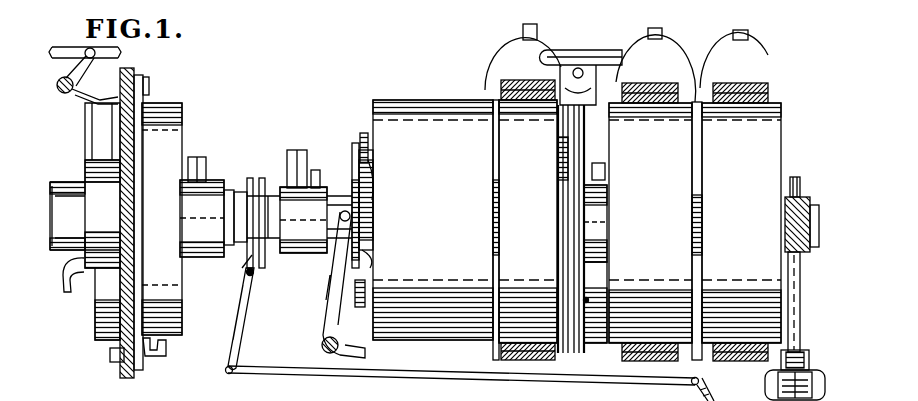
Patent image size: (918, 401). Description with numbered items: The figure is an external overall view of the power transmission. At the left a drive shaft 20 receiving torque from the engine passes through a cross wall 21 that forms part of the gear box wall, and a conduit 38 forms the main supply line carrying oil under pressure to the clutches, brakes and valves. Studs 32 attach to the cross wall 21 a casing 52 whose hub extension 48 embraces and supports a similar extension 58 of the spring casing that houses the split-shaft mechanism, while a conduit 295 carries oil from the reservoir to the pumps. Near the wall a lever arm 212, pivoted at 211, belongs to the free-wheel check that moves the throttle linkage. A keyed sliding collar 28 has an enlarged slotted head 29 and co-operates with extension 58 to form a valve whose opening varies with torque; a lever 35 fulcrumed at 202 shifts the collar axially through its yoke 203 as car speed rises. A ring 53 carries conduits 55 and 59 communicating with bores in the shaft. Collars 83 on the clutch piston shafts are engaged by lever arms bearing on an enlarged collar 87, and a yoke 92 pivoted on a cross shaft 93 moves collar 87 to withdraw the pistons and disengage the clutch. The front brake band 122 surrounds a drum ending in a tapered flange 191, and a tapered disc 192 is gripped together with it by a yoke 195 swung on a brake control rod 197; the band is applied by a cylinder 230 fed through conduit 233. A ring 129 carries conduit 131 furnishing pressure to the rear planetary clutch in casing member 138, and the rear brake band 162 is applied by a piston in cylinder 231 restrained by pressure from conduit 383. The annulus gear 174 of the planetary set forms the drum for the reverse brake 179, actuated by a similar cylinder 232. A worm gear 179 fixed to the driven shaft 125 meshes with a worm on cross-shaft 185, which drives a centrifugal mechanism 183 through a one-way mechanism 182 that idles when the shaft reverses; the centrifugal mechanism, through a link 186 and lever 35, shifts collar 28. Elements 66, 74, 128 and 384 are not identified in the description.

The drive shaft 20 is at (70, 196).
The cross wall 21 is at (132, 72).
The pivot 211 is at (61, 92).
The lever arm 212 is at (78, 97).
The conduit 38 is at (63, 290).
The studs 32 is at (110, 354).
The conduit 295 is at (159, 353).
The casing 52 is at (173, 147).
The hub extension 48 is at (186, 178).
The collar 66 is at (214, 184).
The collar extension 58 is at (224, 256).
The sliding collar 28 is at (250, 178).
The slotted head 29 is at (262, 178).
The fulcrum 202 is at (252, 278).
The lever arm 35 is at (238, 312).
The yoke 203 is at (243, 275).
The ring 53 is at (292, 252).
The conduit 55 is at (296, 150).
The conduit 59 is at (315, 172).
The collars 83 is at (358, 150).
The enlarged collar 87 is at (359, 176).
The yoke 92 is at (330, 298).
The cross shaft 93 is at (321, 345).
The link 186 is at (395, 378).
The drum 74 is at (441, 116).
The brake band 122 is at (509, 80).
The cylinder 230 is at (504, 46).
The conduit 233 is at (536, 26).
The brake control rod 197 is at (586, 56).
The yoke 195 is at (556, 64).
The tapered flange 191 is at (568, 344).
The tapered disc 192 is at (578, 332).
The conduit 131 is at (598, 162).
The ring 129 is at (598, 245).
The pin 128 is at (586, 303).
The brake band 162 is at (651, 84).
The cylinder 231 is at (673, 49).
The conduit 383 is at (652, 30).
The casing member 138 is at (700, 112).
The annulus gear 174 is at (765, 138).
The reverse brake 179 is at (740, 86).
The cylinder 232 is at (766, 50).
The block 384 is at (746, 31).
The driven shaft 125 is at (812, 195).
The cross-shaft 185 is at (793, 308).
The one-way mechanism 182 is at (801, 352).
The centrifugal mechanism 183 is at (764, 384).